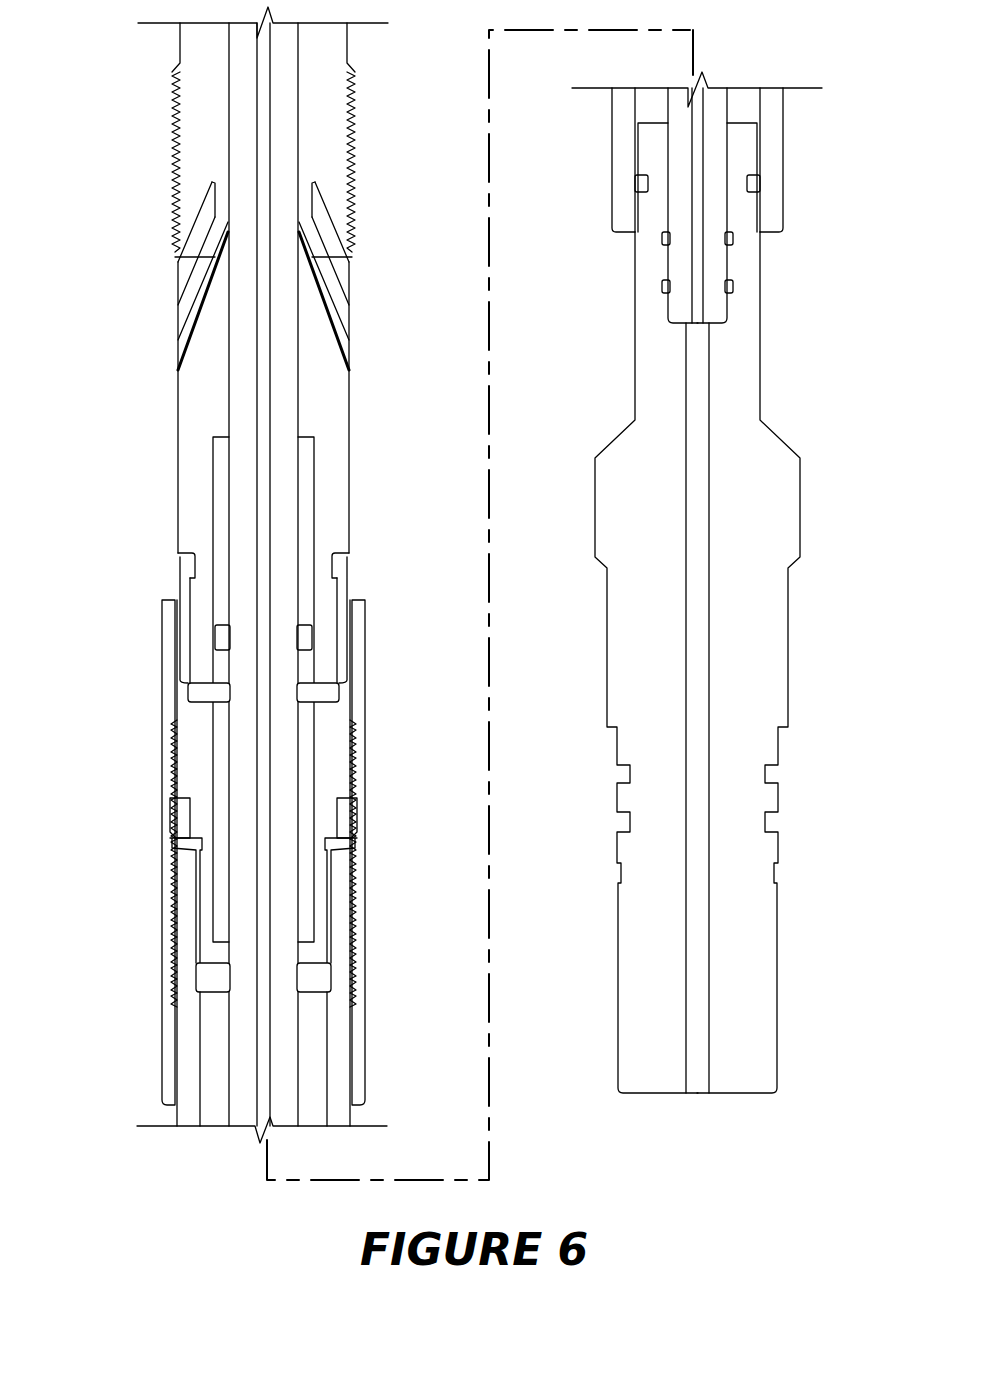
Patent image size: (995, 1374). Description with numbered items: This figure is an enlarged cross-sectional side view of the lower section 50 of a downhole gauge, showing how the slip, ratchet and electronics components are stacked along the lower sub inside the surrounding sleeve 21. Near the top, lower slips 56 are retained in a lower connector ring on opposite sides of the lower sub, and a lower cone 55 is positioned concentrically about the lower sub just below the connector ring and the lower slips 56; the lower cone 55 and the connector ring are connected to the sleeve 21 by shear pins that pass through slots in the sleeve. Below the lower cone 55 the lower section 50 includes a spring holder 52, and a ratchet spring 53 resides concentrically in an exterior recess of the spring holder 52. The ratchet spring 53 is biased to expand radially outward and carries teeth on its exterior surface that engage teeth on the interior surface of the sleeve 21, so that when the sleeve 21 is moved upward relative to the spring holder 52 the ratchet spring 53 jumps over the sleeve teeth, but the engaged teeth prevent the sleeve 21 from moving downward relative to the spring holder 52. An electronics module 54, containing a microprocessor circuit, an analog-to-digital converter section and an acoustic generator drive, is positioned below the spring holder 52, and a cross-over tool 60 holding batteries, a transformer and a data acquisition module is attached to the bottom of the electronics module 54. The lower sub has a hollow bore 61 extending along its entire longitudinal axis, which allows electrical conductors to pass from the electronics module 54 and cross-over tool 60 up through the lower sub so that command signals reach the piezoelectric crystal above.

The sleeve 21 is at (168, 1037).
The lower section 50 is at (425, 540).
The spring holder 52 is at (330, 740).
The ratchet spring 53 is at (348, 824).
The electronics module 54 is at (770, 128).
The lower cone 55 is at (330, 400).
The lower slips 56 is at (330, 118).
The cross-over tool 60 is at (773, 503).
The hollow bore 61 is at (258, 160).